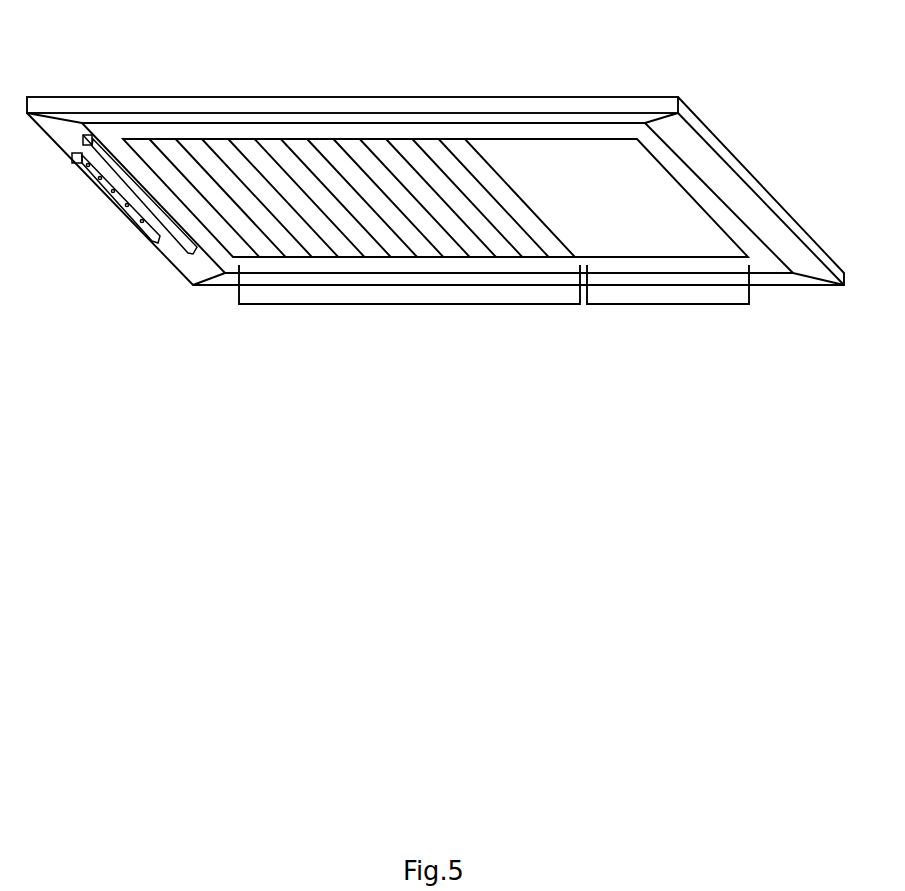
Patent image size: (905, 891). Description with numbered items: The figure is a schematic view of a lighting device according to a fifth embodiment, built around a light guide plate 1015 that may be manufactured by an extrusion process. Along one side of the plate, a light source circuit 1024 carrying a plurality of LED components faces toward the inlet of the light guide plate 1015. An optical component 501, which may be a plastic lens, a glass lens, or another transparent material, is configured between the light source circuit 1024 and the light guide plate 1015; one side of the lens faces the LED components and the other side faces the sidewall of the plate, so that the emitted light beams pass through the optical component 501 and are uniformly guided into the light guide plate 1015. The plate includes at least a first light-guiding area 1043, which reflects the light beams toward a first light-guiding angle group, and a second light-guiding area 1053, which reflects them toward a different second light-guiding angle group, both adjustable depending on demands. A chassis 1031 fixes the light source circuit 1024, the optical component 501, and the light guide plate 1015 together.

The chassis 1031 is at (408, 102).
The light guide plate 1015 is at (663, 155).
The light source circuit 1024 is at (103, 197).
The optical component 501 is at (177, 247).
The first light-guiding area 1043 is at (410, 304).
The second light-guiding area 1053 is at (670, 304).